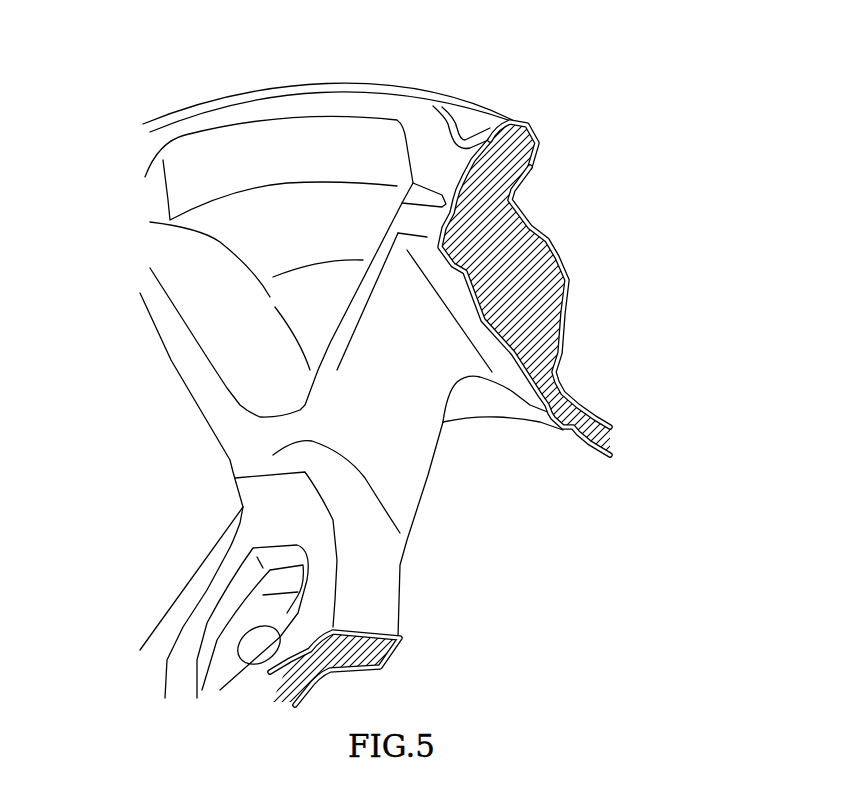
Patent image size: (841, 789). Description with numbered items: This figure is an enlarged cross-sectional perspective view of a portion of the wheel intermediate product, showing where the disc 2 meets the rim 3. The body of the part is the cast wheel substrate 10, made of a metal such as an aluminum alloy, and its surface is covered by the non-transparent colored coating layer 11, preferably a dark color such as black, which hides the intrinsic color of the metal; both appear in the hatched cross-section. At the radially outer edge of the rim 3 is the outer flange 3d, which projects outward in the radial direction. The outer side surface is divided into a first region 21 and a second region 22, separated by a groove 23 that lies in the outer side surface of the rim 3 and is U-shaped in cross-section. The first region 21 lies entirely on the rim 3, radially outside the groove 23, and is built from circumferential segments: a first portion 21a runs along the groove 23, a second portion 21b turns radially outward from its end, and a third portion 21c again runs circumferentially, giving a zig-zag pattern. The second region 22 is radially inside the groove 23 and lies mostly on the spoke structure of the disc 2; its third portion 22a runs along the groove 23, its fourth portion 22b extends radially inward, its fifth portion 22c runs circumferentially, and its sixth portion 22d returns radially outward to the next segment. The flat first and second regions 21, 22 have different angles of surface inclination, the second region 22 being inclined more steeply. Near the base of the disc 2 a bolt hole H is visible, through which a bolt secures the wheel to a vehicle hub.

The disc 2 is at (400, 573).
The rim 3 is at (172, 94).
The outer flange 3d is at (527, 125).
The wheel substrate 10 is at (527, 310).
The colored coating layer 11 is at (571, 270).
The first region 21 is at (459, 152).
The first portion 21a is at (412, 162).
The second portion 21b is at (420, 137).
The third portion 21c is at (240, 115).
The second region 22 is at (435, 243).
The third portion 22a is at (407, 220).
The fourth portion 22b is at (340, 340).
The fifth portion 22c is at (407, 540).
The sixth portion 22d is at (185, 350).
The groove 23 is at (450, 220).
The bolt hole H is at (257, 637).